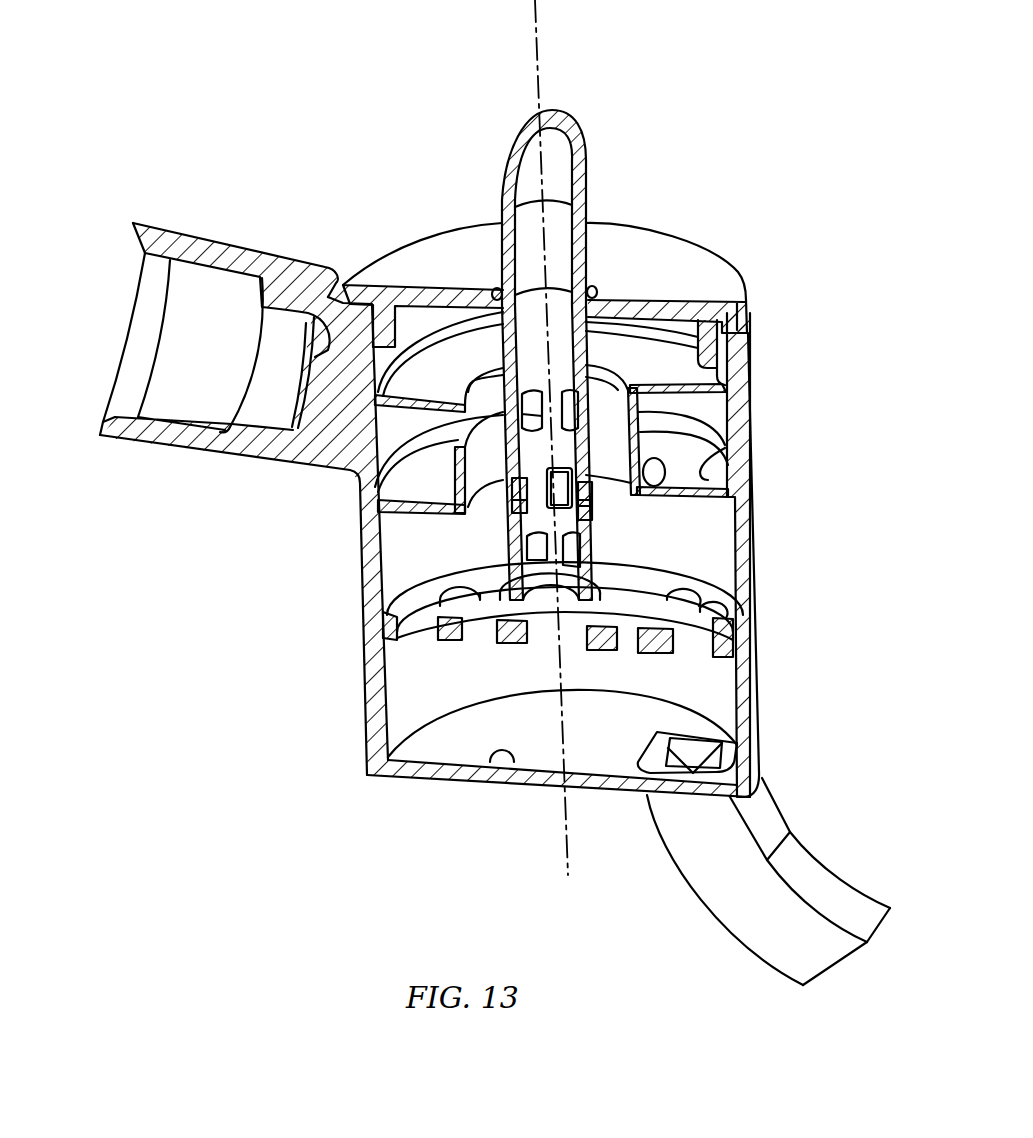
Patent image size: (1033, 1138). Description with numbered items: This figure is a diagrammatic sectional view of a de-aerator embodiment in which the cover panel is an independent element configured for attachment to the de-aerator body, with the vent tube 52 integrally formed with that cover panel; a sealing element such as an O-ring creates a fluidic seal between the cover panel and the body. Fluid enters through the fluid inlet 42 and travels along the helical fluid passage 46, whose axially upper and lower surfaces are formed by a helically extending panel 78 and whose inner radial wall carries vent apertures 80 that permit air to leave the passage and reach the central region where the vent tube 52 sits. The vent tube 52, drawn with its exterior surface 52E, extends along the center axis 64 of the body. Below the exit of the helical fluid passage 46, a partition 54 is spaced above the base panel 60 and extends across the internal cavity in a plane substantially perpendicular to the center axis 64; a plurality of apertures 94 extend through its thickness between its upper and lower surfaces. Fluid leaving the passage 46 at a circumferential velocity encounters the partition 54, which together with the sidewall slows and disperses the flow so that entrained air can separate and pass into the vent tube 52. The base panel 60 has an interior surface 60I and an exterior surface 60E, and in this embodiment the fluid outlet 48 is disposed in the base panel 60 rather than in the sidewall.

The fluid inlet 42 is at (112, 328).
The helical fluid passage 46 is at (358, 489).
The fluid outlet 48 is at (707, 742).
The vent tube 52 is at (545, 304).
The exterior surface of top wall 52E is at (590, 255).
The partition 54 is at (682, 587).
The base panel 60 is at (558, 779).
The exterior surface of base panel 60E is at (457, 778).
The interior surface of base panel 60I is at (512, 768).
The center axis 64 is at (535, 12).
The helically extending panel 78 is at (700, 472).
The vent apertures 80 is at (522, 505).
The apertures 94 is at (693, 632).